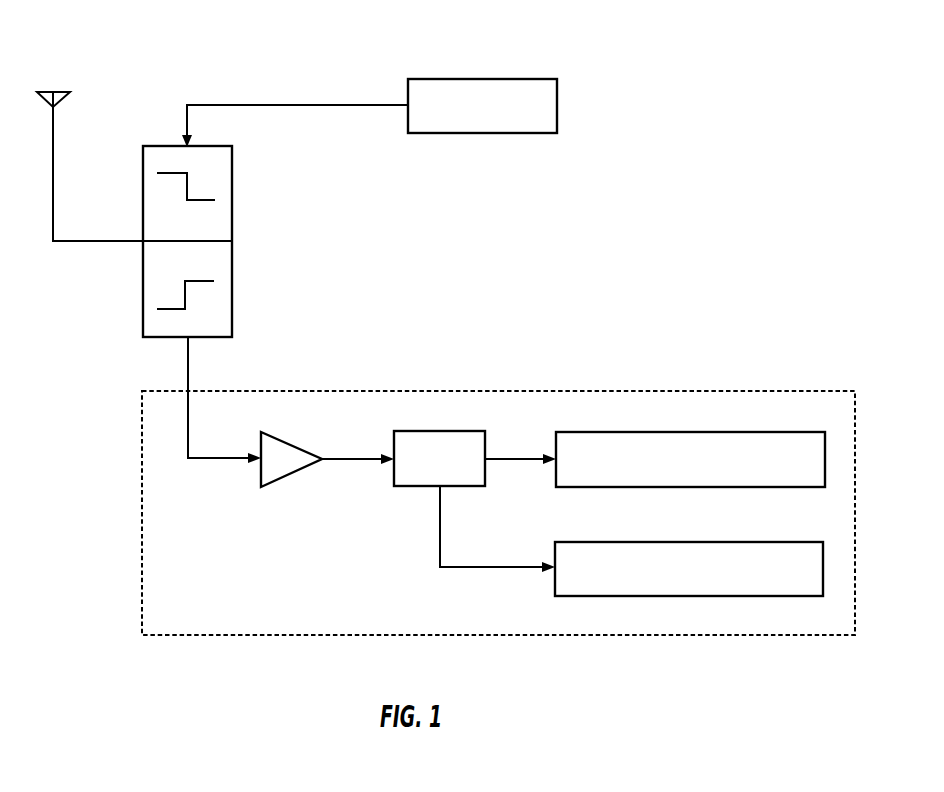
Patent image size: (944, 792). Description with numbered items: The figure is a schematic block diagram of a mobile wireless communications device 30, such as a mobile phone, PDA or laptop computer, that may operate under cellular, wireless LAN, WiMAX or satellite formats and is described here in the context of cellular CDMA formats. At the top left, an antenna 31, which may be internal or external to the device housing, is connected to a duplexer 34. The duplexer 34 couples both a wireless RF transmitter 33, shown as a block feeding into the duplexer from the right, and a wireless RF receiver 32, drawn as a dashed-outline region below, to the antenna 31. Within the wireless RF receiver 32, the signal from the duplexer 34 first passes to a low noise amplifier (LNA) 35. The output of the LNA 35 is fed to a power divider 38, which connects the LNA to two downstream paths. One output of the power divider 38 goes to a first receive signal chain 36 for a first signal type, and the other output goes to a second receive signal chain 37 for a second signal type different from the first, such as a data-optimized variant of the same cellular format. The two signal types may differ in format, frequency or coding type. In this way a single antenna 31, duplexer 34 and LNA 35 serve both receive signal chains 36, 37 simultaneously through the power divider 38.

The mobile wireless communications device 30 is at (702, 69).
The antenna 31 is at (58, 99).
The wireless RF receiver 32 is at (573, 392).
The wireless RF transmitter 33 is at (560, 103).
The duplexer 34 is at (232, 258).
The low noise amplifier (LNA) 35 is at (283, 441).
The first receive signal chain 36 is at (690, 432).
The second receive signal chain 37 is at (653, 596).
The power divider 38 is at (440, 431).